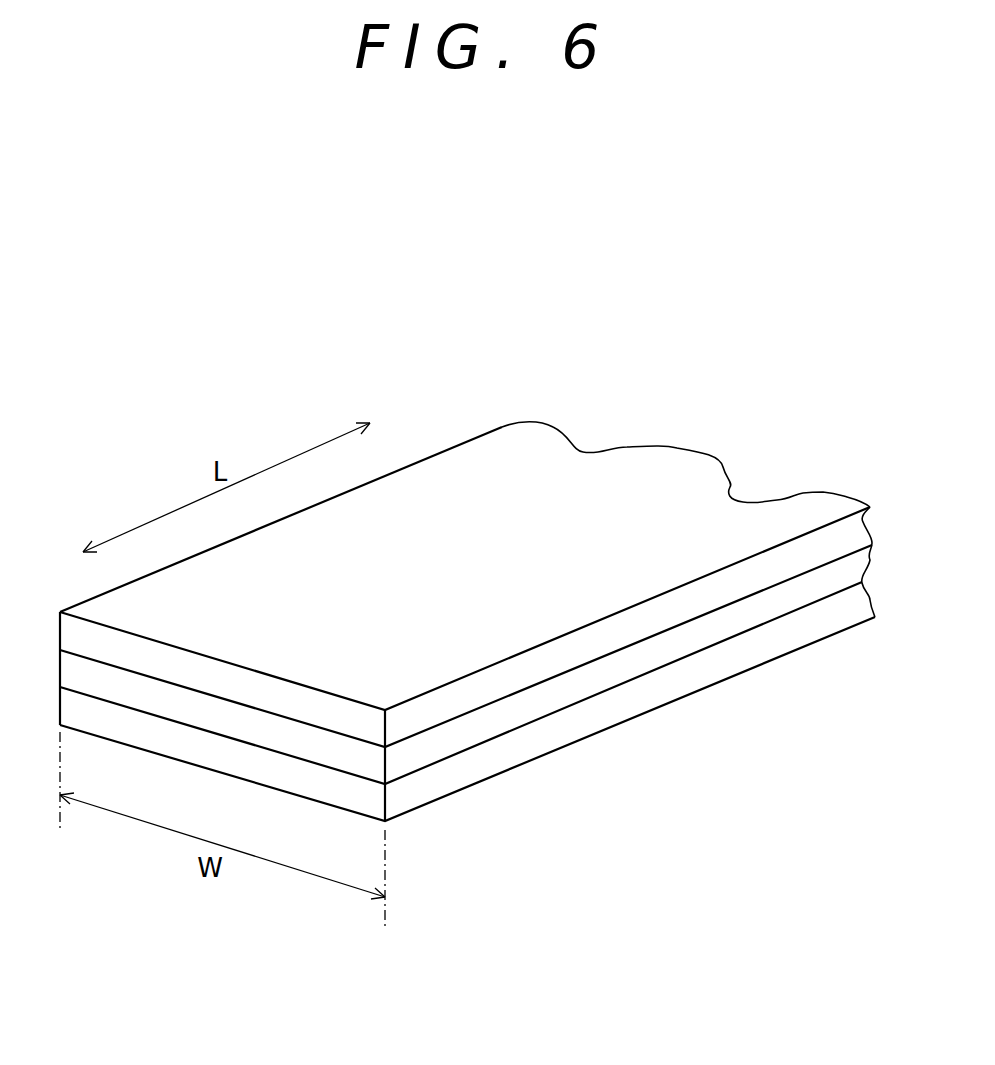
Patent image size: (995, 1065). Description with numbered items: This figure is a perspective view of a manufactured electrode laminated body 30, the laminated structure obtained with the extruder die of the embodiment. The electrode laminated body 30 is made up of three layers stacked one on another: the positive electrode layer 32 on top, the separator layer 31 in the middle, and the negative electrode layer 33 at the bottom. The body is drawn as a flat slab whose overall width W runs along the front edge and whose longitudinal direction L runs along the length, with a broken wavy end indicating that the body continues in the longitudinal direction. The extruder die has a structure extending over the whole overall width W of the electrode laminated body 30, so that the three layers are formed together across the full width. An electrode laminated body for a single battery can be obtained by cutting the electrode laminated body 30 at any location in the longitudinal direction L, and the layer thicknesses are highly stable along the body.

The electrode laminated body 30 is at (467, 587).
The separator layer 31 is at (648, 657).
The positive electrode layer 32 is at (727, 590).
The negative electrode layer 33 is at (540, 733).